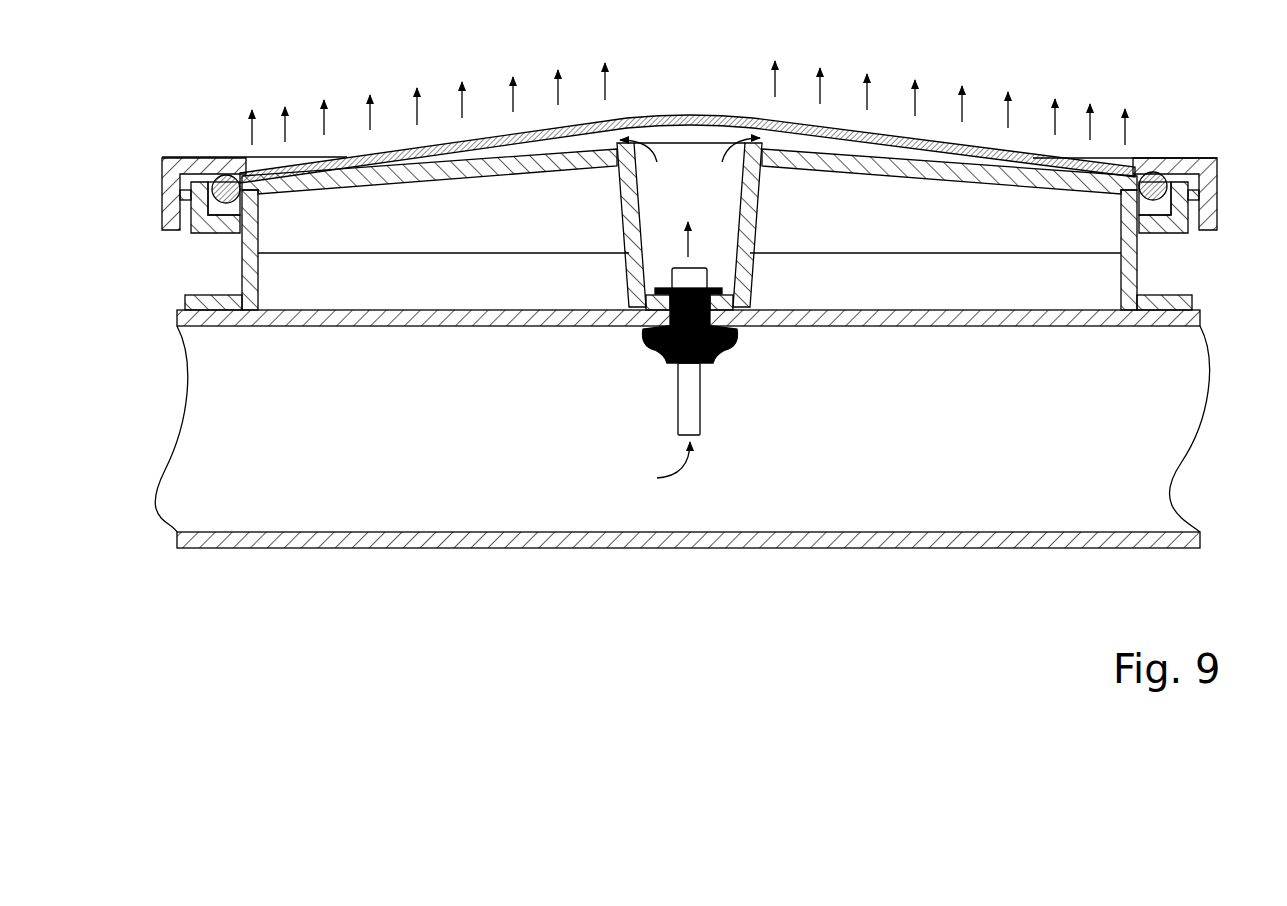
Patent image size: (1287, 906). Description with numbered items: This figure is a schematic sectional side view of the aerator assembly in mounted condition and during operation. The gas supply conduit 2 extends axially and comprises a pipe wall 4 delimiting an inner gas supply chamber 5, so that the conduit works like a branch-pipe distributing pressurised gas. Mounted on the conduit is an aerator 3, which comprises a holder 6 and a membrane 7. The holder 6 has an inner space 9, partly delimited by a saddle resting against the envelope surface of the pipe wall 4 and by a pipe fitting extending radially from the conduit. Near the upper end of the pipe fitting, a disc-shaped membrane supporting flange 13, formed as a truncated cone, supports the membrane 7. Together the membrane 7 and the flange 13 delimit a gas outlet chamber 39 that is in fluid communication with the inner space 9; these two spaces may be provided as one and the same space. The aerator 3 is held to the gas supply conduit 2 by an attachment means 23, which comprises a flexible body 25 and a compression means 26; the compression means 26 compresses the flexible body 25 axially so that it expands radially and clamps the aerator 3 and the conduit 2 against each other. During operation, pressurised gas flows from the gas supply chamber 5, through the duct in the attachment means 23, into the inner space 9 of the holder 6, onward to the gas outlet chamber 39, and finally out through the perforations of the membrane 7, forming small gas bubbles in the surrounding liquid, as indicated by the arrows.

The gas supply conduit 2 is at (325, 548).
The aerator 3 is at (187, 137).
The pipe wall 4 is at (1185, 320).
The inner gas supply chamber 5 is at (1198, 368).
The holder 6 is at (240, 242).
The membrane 7 is at (681, 117).
The inner space 9 is at (648, 227).
The membrane supporting flange 13 is at (892, 173).
The attachment means 23 is at (647, 358).
The flexible body 25 is at (715, 355).
The compression means 26 is at (688, 397).
The gas outlet chamber 39 is at (556, 140).